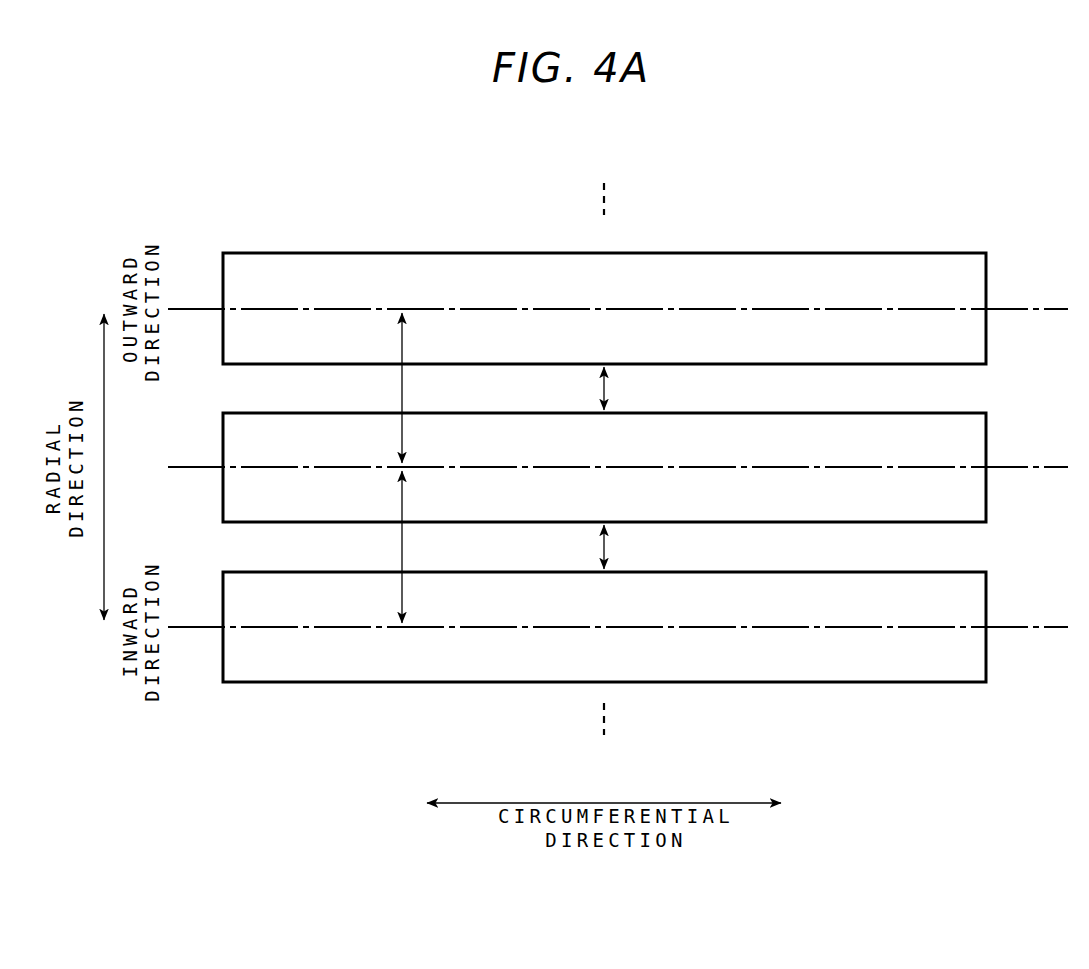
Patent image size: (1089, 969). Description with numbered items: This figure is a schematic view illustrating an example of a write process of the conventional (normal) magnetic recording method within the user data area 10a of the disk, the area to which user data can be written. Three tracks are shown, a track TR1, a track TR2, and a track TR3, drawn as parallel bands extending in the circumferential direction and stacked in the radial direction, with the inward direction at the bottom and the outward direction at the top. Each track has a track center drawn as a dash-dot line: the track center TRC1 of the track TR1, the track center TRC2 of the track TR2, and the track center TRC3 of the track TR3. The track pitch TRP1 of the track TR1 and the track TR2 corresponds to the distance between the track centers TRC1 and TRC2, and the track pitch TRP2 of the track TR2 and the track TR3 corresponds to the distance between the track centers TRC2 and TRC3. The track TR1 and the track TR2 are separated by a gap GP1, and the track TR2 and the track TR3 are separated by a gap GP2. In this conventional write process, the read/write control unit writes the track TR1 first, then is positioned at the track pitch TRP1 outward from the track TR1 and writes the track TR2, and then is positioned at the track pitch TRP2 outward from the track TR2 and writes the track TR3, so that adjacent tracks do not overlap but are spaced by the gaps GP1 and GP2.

The user data area 10a is at (879, 185).
The track TR1 is at (975, 610).
The track TR2 is at (975, 450).
The track TR3 is at (975, 292).
The track center TRC1 is at (849, 628).
The track center TRC2 is at (840, 468).
The track center TRC3 is at (840, 310).
The track pitch TRP1 is at (401, 546).
The track pitch TRP2 is at (401, 388).
The gap GP1 is at (608, 546).
The gap GP2 is at (608, 388).